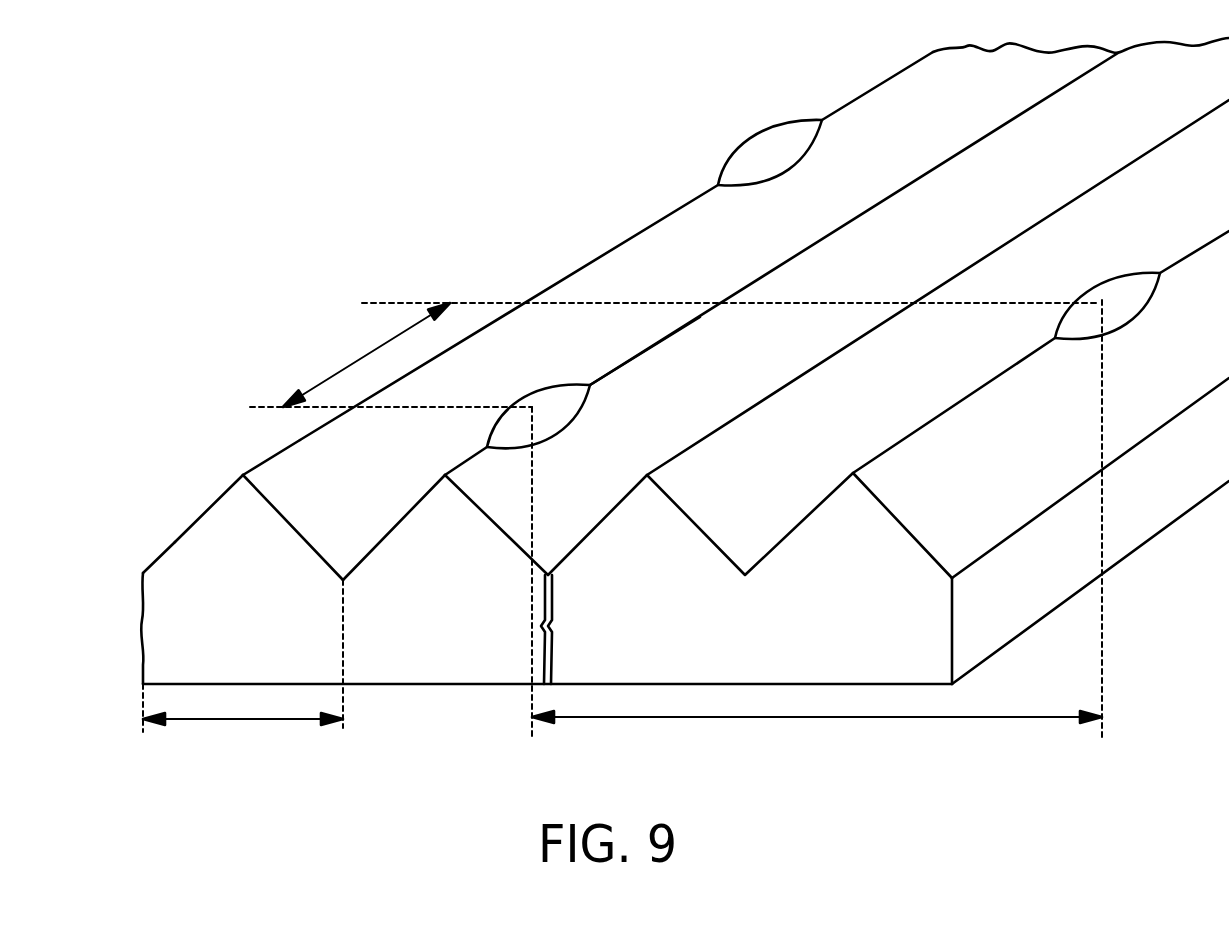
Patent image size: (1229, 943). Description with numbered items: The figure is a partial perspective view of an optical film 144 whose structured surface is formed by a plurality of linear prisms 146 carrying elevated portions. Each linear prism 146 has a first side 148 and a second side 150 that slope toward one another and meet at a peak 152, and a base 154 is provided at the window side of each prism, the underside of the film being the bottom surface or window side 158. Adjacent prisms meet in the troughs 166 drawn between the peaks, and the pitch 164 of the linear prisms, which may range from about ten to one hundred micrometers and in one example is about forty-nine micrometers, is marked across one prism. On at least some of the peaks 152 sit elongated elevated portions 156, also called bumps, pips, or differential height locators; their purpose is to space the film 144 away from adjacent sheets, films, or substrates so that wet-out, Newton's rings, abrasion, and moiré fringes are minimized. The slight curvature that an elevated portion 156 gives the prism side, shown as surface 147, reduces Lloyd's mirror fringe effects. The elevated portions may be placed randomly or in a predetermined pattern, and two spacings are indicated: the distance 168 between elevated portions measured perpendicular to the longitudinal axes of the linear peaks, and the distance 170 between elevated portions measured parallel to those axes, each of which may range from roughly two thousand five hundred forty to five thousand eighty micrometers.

The optical film 144 is at (518, 195).
The linear prism 146 is at (196, 540).
The surface 147 is at (558, 417).
The first side 148 is at (223, 488).
The second side 150 is at (295, 528).
The peak 152 is at (243, 473).
The base 154 is at (178, 583).
The elevated portion 156 is at (750, 133).
The bottom surface or window side 158 is at (433, 686).
The pitch 164 is at (243, 722).
The valley / groove between structures 166 is at (140, 570).
The distance between elevated portions 168 is at (680, 720).
The distance 170 is at (350, 363).